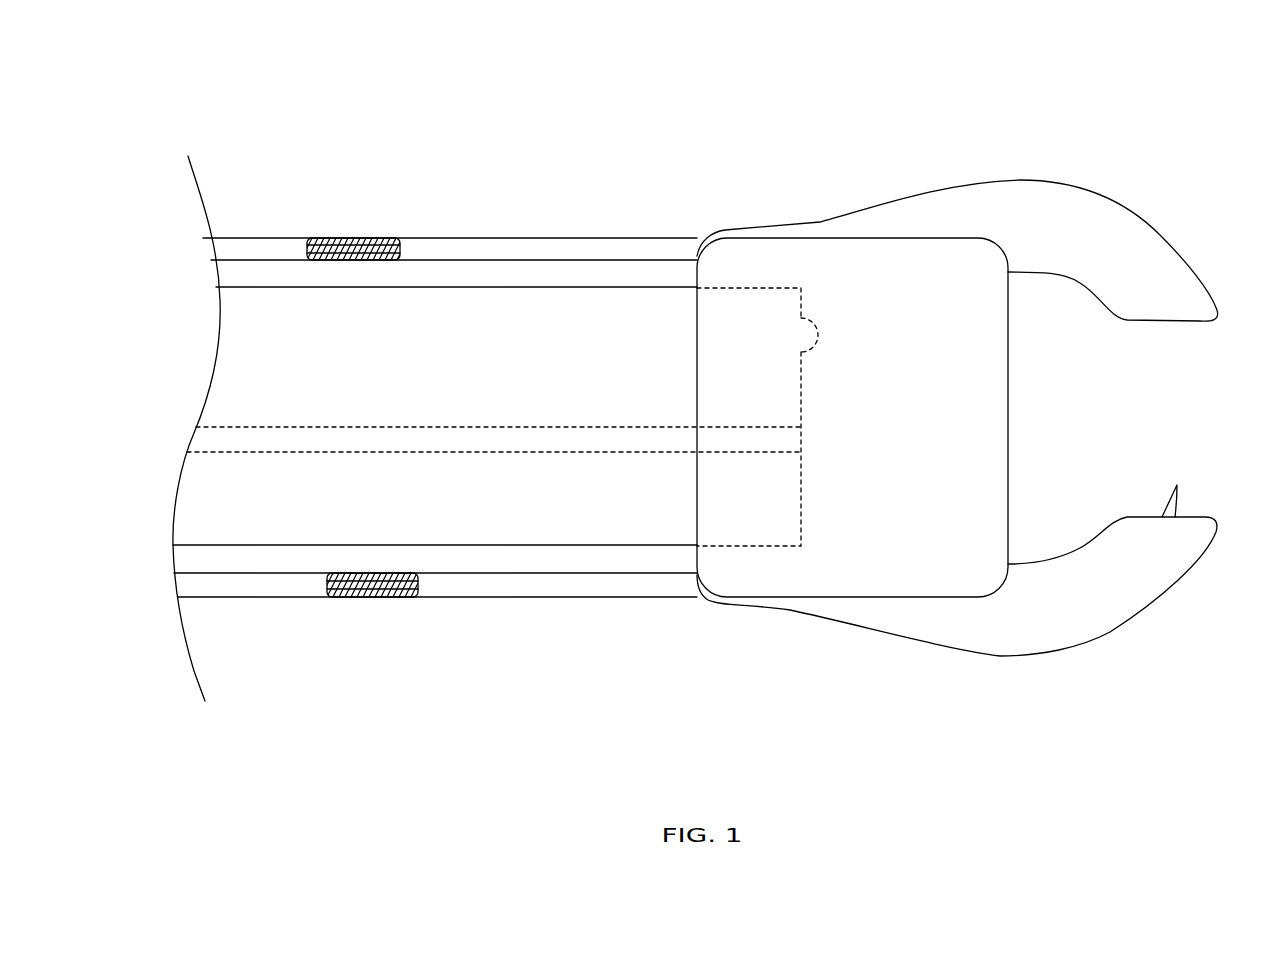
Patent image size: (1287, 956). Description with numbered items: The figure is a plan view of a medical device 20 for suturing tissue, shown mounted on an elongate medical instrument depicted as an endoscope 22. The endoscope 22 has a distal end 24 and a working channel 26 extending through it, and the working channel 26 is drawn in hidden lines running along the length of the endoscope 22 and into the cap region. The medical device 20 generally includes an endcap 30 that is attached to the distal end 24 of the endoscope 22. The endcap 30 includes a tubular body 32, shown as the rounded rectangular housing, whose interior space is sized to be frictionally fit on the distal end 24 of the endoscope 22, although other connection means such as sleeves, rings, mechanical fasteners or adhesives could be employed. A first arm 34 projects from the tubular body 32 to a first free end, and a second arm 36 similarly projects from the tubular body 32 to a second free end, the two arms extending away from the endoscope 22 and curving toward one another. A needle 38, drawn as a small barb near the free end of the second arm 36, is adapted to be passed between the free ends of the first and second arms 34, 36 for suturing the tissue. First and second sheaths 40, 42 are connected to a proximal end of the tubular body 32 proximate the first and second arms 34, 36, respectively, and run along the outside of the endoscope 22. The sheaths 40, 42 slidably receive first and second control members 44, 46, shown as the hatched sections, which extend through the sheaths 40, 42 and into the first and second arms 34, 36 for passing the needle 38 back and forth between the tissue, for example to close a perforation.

The medical device 20 is at (510, 100).
The endoscope 22 is at (525, 330).
The distal end 24 is at (683, 540).
The working channel 26 is at (582, 453).
The endcap 30 is at (908, 687).
The tubular body 32 is at (882, 295).
The first arm 34 is at (1117, 230).
The second arm 36 is at (1113, 602).
The needle 38 is at (1178, 504).
The first sheath 40 is at (628, 240).
The second sheath 42 is at (479, 593).
The first control member 44 is at (355, 250).
The second control member 46 is at (355, 587).